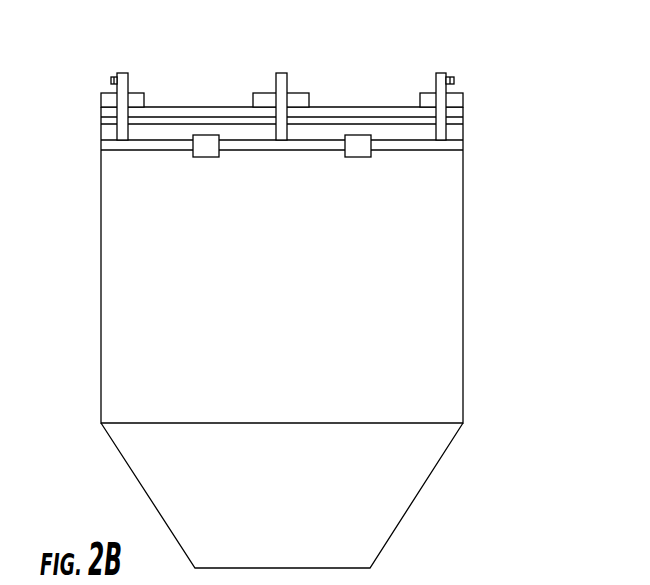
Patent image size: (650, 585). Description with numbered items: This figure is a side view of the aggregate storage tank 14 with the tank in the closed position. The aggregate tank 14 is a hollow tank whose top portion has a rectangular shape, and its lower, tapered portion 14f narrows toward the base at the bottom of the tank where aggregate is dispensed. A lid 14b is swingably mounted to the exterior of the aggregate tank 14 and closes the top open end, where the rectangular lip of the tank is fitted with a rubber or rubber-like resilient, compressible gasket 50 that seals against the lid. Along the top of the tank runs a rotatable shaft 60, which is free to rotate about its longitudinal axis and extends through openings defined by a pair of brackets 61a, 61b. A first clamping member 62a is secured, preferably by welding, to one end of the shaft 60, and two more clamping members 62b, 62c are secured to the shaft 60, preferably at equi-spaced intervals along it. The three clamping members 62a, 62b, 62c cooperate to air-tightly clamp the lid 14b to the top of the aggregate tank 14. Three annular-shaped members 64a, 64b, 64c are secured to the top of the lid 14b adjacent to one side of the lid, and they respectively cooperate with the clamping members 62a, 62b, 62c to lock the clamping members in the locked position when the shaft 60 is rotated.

The aggregate storage tank 14 is at (45, 54).
The lid 14b is at (172, 110).
The lower tapered portion 14f is at (420, 490).
The gasket 50 is at (101, 123).
The rotatable shaft 60 is at (172, 143).
The bracket 61a is at (207, 157).
The bracket 61b is at (358, 157).
The first clamping member 62a is at (440, 73).
The clamping member 62b is at (281, 73).
The clamping member 62c is at (122, 73).
The annular-shaped member 64a is at (425, 98).
The annular-shaped member 64b is at (258, 98).
The annular-shaped member 64c is at (107, 99).